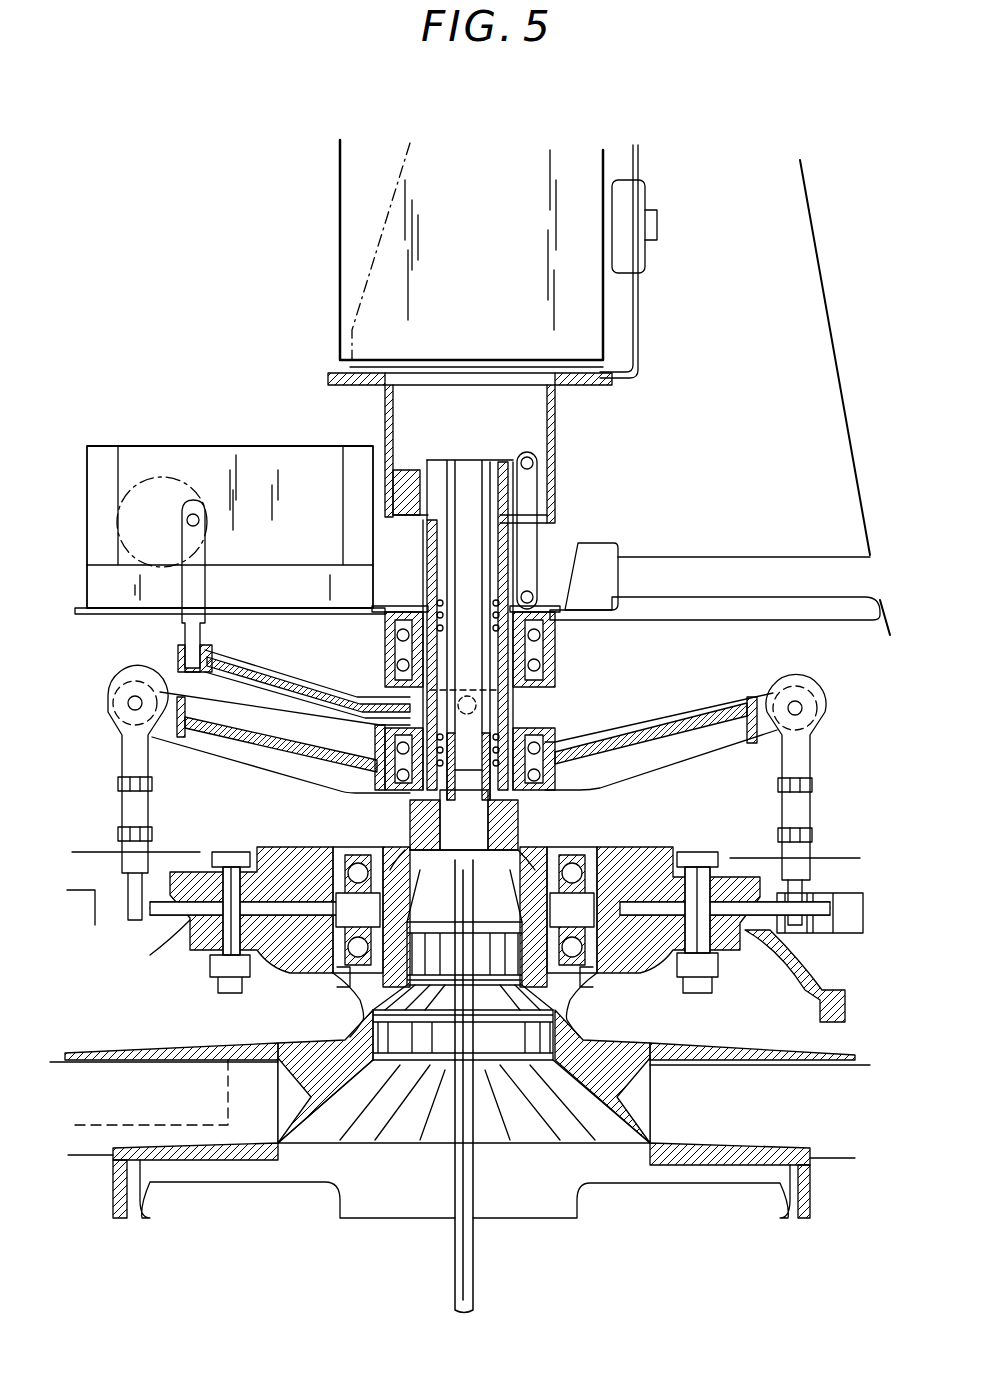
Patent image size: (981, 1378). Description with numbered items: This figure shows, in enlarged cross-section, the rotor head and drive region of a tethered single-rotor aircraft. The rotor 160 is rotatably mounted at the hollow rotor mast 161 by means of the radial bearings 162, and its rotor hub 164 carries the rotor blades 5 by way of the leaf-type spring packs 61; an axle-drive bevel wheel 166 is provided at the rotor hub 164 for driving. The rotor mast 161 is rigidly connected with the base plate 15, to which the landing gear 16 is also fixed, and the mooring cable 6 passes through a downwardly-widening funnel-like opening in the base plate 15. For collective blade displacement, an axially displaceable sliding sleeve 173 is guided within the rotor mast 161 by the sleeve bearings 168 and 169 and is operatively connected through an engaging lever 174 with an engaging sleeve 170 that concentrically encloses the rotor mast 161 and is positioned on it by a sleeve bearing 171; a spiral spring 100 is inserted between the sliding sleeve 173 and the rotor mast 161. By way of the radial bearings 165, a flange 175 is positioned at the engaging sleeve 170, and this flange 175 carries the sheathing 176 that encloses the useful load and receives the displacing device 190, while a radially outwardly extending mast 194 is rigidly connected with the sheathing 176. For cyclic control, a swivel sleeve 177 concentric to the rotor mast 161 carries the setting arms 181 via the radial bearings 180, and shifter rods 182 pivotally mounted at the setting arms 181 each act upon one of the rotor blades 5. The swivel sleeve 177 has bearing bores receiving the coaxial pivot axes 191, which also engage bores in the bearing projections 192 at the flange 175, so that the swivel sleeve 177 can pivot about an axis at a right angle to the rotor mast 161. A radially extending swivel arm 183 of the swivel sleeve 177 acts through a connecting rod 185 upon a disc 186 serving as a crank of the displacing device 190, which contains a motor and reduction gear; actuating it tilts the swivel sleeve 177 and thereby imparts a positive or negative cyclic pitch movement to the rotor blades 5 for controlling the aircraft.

The displacing device 190 is at (157, 343).
The sheathing 176 is at (832, 350).
The mast 194 is at (732, 566).
The engaging sleeve 170 is at (548, 622).
The sliding sleeve 173 is at (487, 480).
The sleeve bearing 168 is at (510, 535).
The engaging lever 174 is at (540, 490).
The disc 186 is at (130, 540).
The connecting rod 185 is at (185, 595).
The swivel arm 183 is at (240, 668).
The sleeve bearing 171 is at (385, 650).
The flange 175 is at (385, 675).
The radial bearings 165 is at (560, 650).
The bearing projections 192 is at (480, 692).
The pivot axes 191 is at (478, 707).
The spiral spring 100 is at (540, 740).
The swivel sleeve 177 is at (385, 798).
The shifter rods 182 is at (122, 745).
The setting arms 181 is at (262, 742).
The radial bearings 180 is at (550, 790).
The rotor 160 is at (850, 680).
The rotor blades 5 is at (80, 885).
The leaf-type spring packs 61 is at (300, 872).
The radial bearings 162 is at (310, 988).
The rotor hub 164 is at (682, 942).
The axle-drive bevel wheel 166 is at (805, 1005).
The rotor mast 161 is at (505, 815).
The sleeve bearing 169 is at (430, 832).
The mooring cable 6 is at (457, 1264).
The base plate 15 is at (310, 1143).
The landing gear 16 is at (110, 1150).